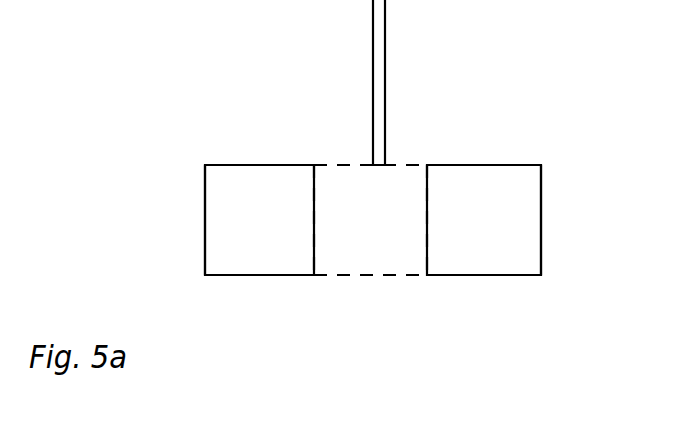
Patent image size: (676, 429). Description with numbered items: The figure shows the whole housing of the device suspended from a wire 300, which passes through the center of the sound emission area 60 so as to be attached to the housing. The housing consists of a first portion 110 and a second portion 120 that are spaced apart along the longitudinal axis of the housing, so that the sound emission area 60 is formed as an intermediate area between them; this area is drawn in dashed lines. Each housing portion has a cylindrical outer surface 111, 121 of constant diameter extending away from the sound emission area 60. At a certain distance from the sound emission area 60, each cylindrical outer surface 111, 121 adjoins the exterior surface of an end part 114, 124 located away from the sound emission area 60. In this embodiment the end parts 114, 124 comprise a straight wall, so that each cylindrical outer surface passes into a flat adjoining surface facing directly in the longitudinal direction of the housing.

The sound emission area 60 is at (172, 90).
The first portion 110 is at (265, 309).
The cylindrical outer surface 111 is at (248, 165).
The end part 114 is at (204, 212).
The second portion 120 is at (486, 312).
The cylindrical outer surface 121 is at (490, 165).
The end part 124 is at (547, 212).
The wire 300 is at (385, 73).